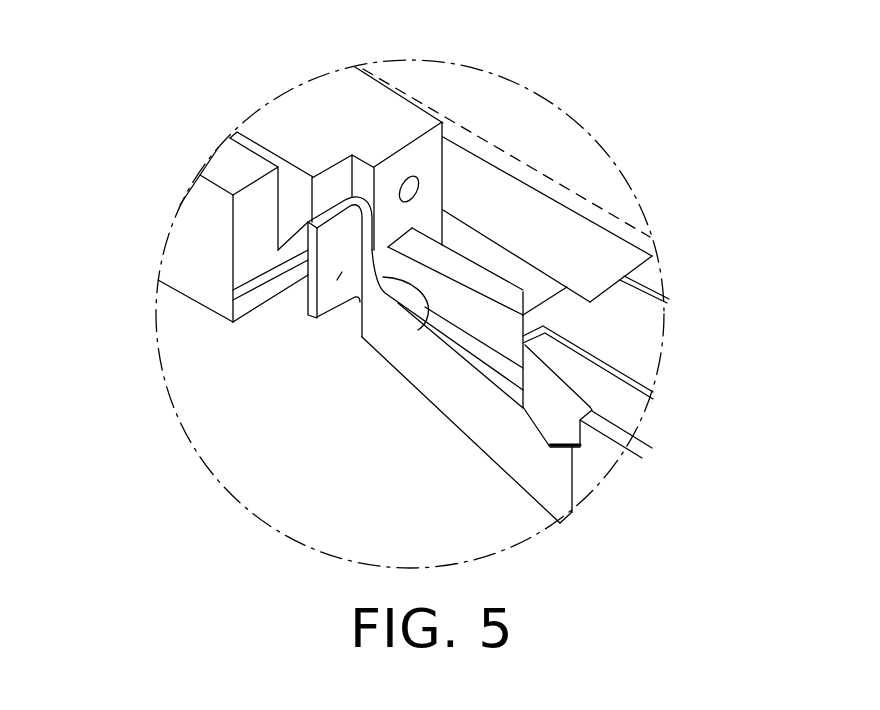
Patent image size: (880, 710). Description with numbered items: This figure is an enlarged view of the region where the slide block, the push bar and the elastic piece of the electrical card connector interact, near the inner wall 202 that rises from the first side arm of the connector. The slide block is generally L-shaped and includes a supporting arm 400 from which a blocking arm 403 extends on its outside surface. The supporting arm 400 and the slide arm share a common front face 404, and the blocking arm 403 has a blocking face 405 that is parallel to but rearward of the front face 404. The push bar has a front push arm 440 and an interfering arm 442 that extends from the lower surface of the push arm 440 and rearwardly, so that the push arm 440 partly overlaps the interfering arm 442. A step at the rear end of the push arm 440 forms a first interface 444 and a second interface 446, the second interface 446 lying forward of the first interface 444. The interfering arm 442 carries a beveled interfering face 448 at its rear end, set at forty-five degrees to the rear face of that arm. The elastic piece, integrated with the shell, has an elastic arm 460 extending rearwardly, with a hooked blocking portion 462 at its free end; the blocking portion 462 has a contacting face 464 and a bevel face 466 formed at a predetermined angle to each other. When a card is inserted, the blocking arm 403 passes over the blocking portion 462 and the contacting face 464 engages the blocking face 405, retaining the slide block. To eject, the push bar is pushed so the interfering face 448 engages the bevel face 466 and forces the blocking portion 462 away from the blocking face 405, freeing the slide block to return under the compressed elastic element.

The inner wall 202 is at (650, 283).
The supporting arm 400 is at (347, 115).
The blocking arm 403 is at (297, 203).
The front face 404 is at (418, 161).
The blocking face 405 is at (332, 187).
The push arm 440 is at (627, 355).
The interfering arm 442 is at (452, 310).
The first interface 444 is at (553, 292).
The second interface 446 is at (608, 287).
The interfering face 448 is at (425, 308).
The elastic arm 460 is at (473, 412).
The blocking portion 462 is at (342, 272).
The contacting face 464 is at (233, 300).
The bevel face 466 is at (398, 175).